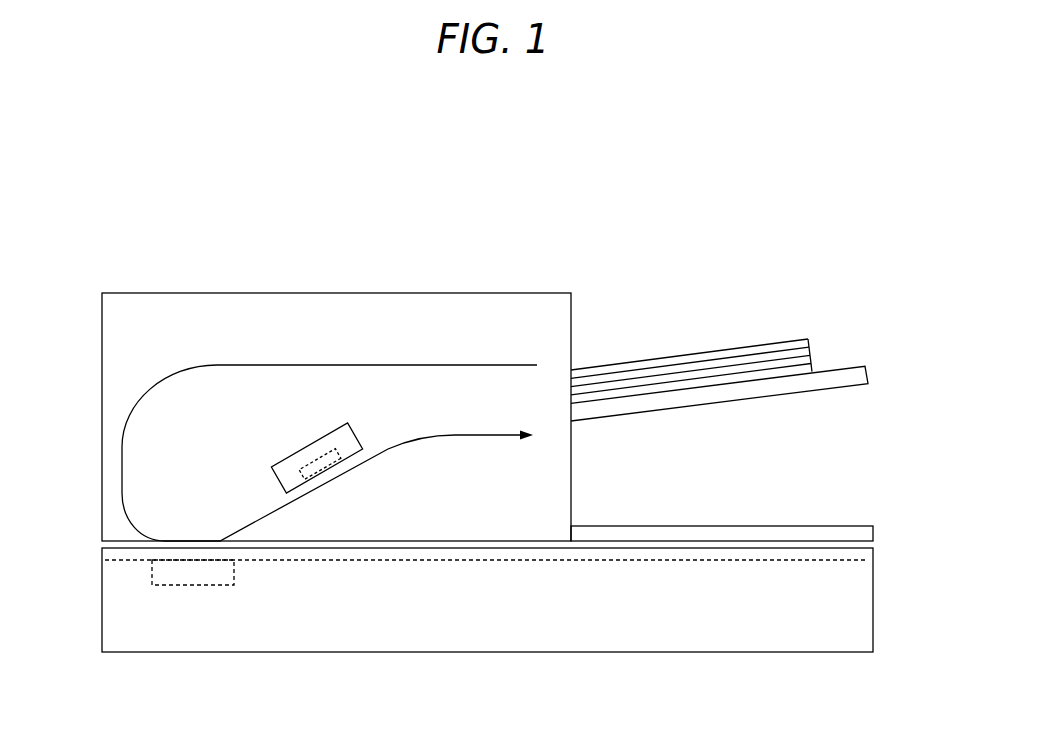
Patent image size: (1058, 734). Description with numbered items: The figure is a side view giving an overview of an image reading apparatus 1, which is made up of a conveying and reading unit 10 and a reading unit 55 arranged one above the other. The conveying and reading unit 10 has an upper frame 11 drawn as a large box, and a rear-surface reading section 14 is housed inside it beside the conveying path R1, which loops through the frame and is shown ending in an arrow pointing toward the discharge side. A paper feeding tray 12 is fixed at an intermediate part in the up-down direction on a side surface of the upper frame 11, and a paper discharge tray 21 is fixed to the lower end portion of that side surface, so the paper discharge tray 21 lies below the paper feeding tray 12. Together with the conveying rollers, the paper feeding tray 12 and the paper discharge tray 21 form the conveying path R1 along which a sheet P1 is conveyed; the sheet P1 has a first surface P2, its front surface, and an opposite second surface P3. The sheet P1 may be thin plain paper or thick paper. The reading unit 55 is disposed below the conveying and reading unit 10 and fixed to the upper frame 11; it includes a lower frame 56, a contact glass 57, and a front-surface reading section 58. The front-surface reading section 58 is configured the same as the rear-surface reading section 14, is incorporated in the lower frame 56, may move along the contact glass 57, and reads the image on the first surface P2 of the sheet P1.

The image reading apparatus 1 is at (72, 134).
The conveying and reading unit 10 is at (109, 237).
The upper frame 11 is at (523, 292).
The conveying path R1 is at (292, 364).
The rear-surface reading section 14 is at (310, 442).
The sheet P1 is at (814, 350).
The first surface P2 is at (742, 348).
The second surface P3 is at (745, 360).
The paper feeding tray 12 is at (869, 372).
The paper discharge tray 21 is at (833, 525).
The reading unit 55 is at (462, 637).
The lower frame 56 is at (762, 653).
The contact glass 57 is at (342, 561).
The front-surface reading section 58 is at (193, 586).